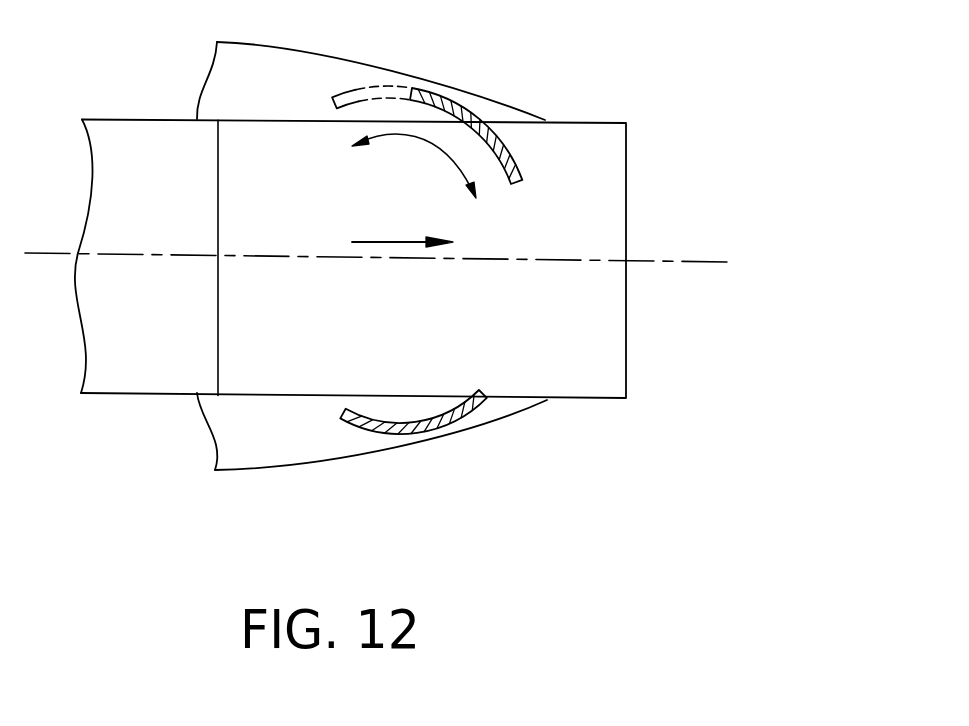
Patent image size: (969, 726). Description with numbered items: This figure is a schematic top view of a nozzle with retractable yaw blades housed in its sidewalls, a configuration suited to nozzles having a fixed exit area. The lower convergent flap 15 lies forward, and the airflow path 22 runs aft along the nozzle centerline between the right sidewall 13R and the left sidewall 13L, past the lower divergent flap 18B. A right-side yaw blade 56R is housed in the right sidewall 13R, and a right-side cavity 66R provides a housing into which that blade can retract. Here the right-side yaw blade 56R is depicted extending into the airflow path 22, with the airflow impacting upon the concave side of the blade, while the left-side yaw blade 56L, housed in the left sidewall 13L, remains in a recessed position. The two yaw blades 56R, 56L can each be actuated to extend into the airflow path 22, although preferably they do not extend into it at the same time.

The lower convergent flap 15 is at (115, 130).
The lower divergent flap 18B is at (608, 183).
The right sidewall 13R is at (516, 92).
The left sidewall 13L is at (297, 455).
The right-side yaw blade 56R is at (520, 172).
The left-side yaw blade 56L is at (372, 410).
The right-side cavity 66R is at (358, 90).
The airflow path 22 is at (396, 240).